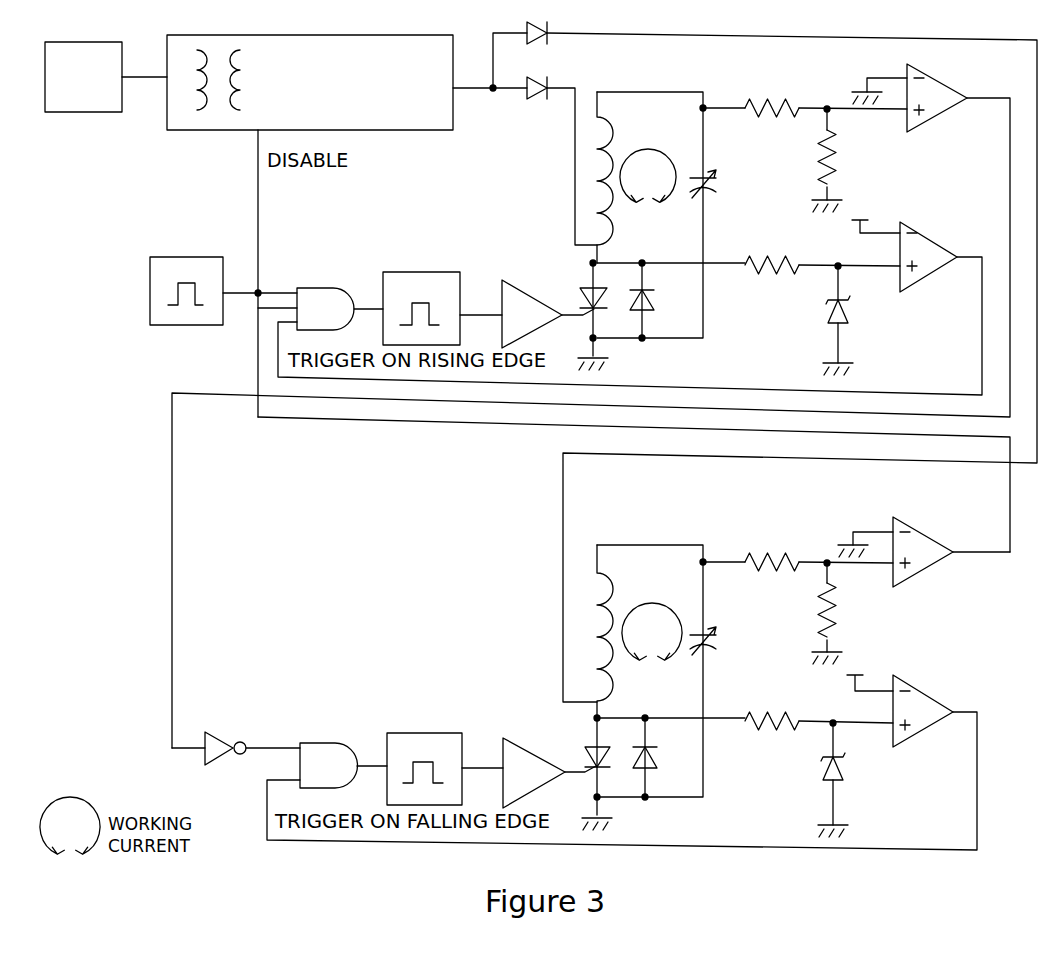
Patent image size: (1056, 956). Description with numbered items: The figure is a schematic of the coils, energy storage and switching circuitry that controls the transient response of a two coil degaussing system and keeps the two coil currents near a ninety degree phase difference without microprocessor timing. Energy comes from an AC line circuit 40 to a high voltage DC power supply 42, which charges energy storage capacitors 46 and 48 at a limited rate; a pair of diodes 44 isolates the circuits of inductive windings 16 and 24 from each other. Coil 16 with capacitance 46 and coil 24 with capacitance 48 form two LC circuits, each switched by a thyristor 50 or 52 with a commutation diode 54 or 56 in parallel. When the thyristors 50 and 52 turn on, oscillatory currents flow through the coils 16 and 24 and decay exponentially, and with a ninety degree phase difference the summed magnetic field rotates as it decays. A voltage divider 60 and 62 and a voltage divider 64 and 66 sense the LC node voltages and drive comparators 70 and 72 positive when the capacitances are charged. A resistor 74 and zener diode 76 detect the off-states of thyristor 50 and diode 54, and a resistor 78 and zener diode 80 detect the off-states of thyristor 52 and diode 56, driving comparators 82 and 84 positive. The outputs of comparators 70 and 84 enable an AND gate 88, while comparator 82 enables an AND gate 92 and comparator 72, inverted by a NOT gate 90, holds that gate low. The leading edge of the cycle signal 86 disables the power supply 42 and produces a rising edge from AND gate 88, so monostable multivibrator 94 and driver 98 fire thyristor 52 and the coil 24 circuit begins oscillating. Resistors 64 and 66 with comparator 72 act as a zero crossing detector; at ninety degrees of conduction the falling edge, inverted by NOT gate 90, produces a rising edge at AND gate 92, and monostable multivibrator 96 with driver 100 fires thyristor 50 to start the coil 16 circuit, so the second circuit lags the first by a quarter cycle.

The coil 16 is at (598, 628).
The coil 24 is at (597, 177).
The AC line circuit 40 is at (84, 113).
The high voltage DC power supply 42 is at (198, 131).
The pair of diodes 44 is at (540, 76).
The energy storage capacitor 46 is at (710, 642).
The energy storage capacitor 48 is at (710, 186).
The switching thyristor 50 is at (602, 782).
The switching thyristor 52 is at (600, 322).
The commutation diode 54 is at (652, 782).
The commutation diode 56 is at (650, 320).
The voltage divider resistor 60 is at (783, 553).
The voltage divider resistor 62 is at (840, 610).
The voltage divider resistor 64 is at (783, 100).
The voltage divider resistor 66 is at (838, 150).
The comparator 70 is at (928, 552).
The comparator 72 is at (938, 92).
The resistor 74 is at (768, 735).
The zener diode 76 is at (848, 778).
The resistor 78 is at (766, 282).
The zener diode 80 is at (850, 322).
The comparator 82 is at (928, 700).
The comparator 84 is at (925, 250).
The cycle signal 86 is at (178, 268).
The AND gate 88 is at (332, 300).
The NOT gate 90 is at (205, 758).
The AND gate 92 is at (330, 755).
The monostable multivibrator 94 is at (405, 292).
The monostable multivibrator 96 is at (407, 748).
The driver 98 is at (513, 295).
The driver 100 is at (515, 750).